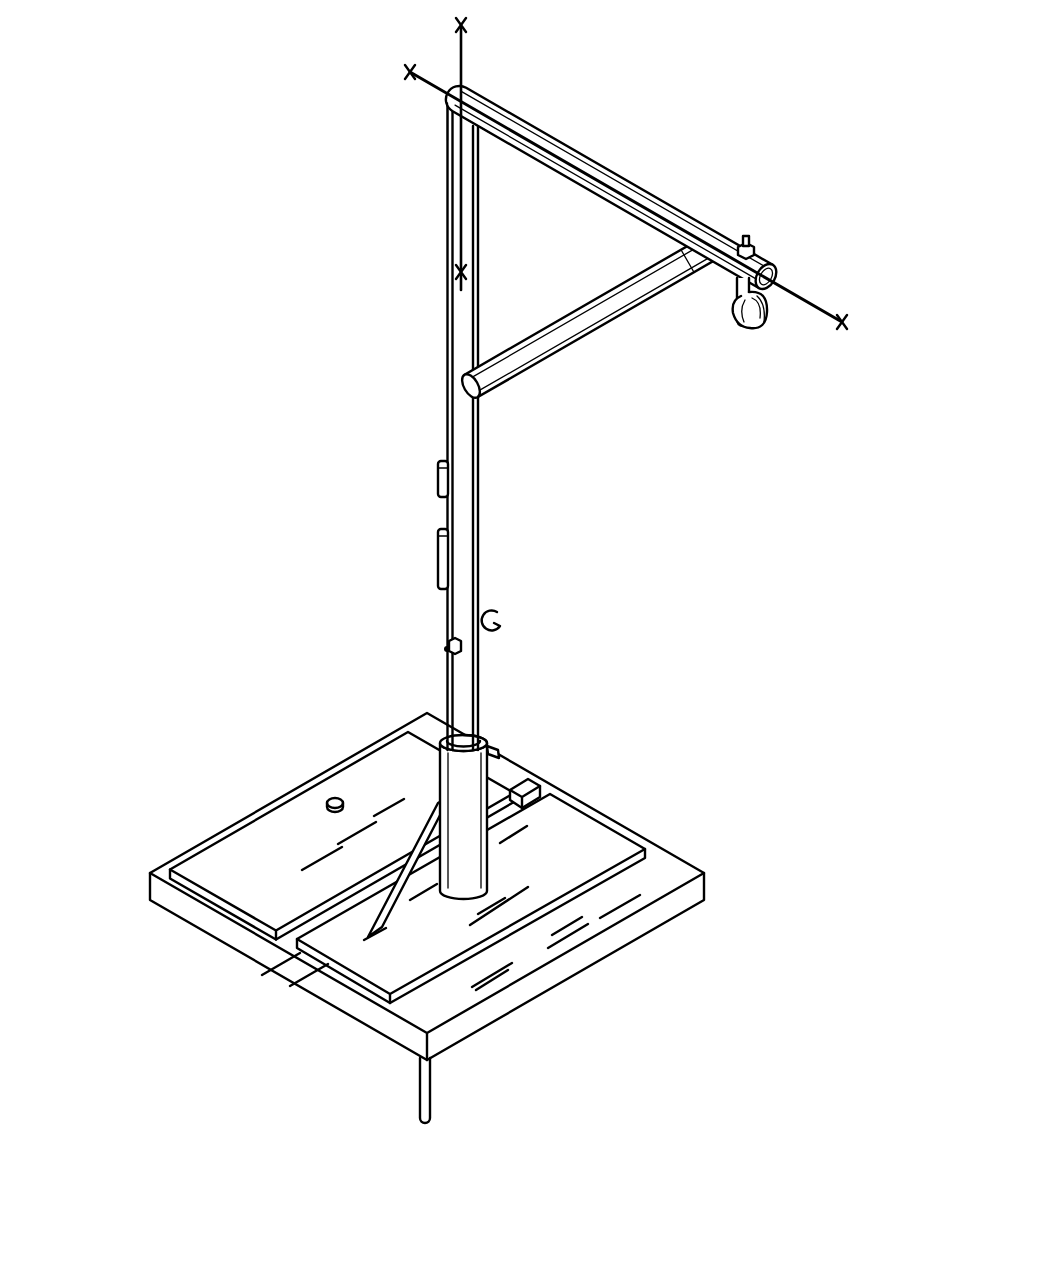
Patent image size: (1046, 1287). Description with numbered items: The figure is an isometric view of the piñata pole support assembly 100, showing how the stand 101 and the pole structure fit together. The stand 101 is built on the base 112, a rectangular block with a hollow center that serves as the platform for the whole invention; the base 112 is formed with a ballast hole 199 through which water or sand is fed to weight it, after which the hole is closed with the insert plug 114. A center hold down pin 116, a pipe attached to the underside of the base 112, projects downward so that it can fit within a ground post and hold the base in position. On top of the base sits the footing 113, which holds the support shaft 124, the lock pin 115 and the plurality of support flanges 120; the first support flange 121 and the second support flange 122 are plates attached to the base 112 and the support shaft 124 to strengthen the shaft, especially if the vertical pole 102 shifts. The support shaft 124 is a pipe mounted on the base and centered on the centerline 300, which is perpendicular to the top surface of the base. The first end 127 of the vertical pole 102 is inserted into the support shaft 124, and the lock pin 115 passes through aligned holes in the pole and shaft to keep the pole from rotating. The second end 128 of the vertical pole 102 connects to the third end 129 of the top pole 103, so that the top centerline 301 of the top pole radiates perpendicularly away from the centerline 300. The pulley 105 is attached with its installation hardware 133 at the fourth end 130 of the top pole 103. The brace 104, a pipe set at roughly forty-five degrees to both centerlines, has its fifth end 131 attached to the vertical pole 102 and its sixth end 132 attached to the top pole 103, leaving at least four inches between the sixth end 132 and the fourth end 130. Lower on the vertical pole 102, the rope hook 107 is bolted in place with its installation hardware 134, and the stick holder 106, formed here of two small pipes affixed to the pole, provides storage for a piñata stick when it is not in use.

The piñata pole support assembly 100 is at (275, 252).
The stand 101 is at (150, 850).
The vertical pole 102 is at (440, 272).
The top pole 103 is at (578, 152).
The brace 104 is at (578, 350).
The pulley 105 is at (757, 330).
The stick holder 106 is at (438, 480).
The rope hook 107 is at (500, 622).
The base 112 is at (653, 870).
The footing 113 is at (510, 815).
The insert plug 114 is at (333, 798).
The lock pin 115 is at (498, 756).
The center hold down pin 116 is at (432, 1085).
The plurality of support flanges 120 is at (425, 897).
The first support flange 121 is at (537, 833).
The second support flange 122 is at (364, 938).
The support shaft 124 is at (444, 760).
The first end 127 is at (481, 742).
The second end 128 is at (446, 132).
The third end 129 is at (483, 108).
The fourth end 130 is at (780, 272).
The fifth end 131 is at (482, 400).
The sixth end 132 is at (705, 275).
The installation hardware 133 is at (745, 236).
The installation hardware 134 is at (448, 645).
The ballast hole 199 is at (327, 808).
The centerline 300 is at (464, 52).
The top centerline 301 is at (820, 297).